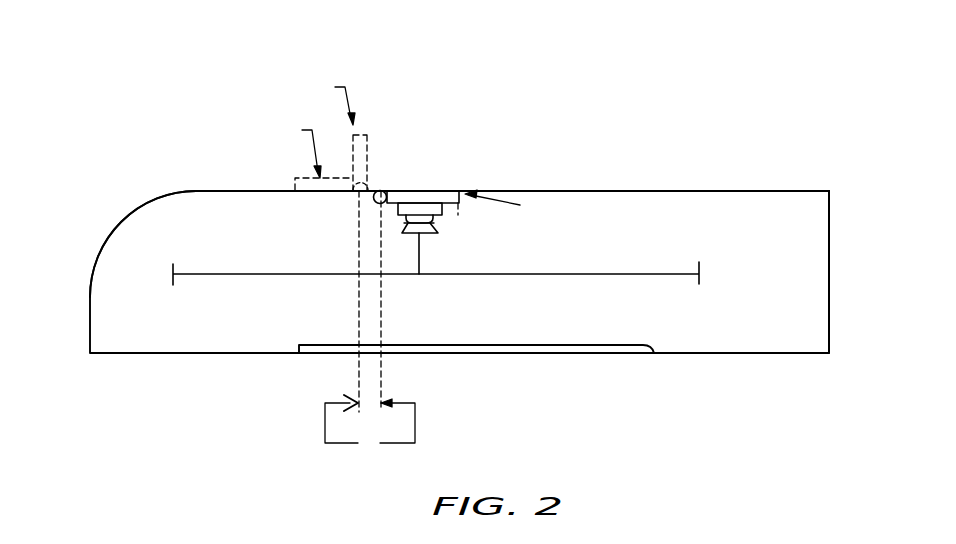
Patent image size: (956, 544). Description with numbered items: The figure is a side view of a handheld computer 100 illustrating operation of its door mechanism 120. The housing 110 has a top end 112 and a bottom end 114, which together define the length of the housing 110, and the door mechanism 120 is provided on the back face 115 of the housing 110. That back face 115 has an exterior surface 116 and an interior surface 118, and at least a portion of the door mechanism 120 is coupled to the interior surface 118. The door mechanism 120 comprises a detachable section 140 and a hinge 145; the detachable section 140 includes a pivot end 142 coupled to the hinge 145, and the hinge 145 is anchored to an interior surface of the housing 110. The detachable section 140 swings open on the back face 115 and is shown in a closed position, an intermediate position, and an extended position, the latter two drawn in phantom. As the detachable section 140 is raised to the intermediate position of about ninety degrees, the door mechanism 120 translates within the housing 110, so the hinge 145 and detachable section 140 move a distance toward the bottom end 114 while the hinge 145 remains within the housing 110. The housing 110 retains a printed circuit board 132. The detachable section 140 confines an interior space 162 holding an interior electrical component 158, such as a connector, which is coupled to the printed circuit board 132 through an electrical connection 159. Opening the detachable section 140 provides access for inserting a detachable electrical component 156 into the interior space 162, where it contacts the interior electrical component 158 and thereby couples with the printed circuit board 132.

The handheld computer 100 is at (590, 85).
The housing 110 is at (107, 332).
The top end 112 is at (829, 230).
The bottom end 114 is at (98, 258).
The back face 115 is at (692, 188).
The exterior surface 116 is at (790, 188).
The interior surface 118 is at (626, 192).
The door mechanism 120 is at (407, 110).
The printed circuit board 132 is at (217, 275).
The detachable section 140 is at (428, 197).
The pivot end 142 is at (384, 188).
The hinge 145 is at (376, 203).
The detachable electrical component 156 is at (456, 215).
The interior electrical component 158 is at (433, 224).
The electrical connection 159 is at (419, 255).
The interior space 162 is at (438, 216).